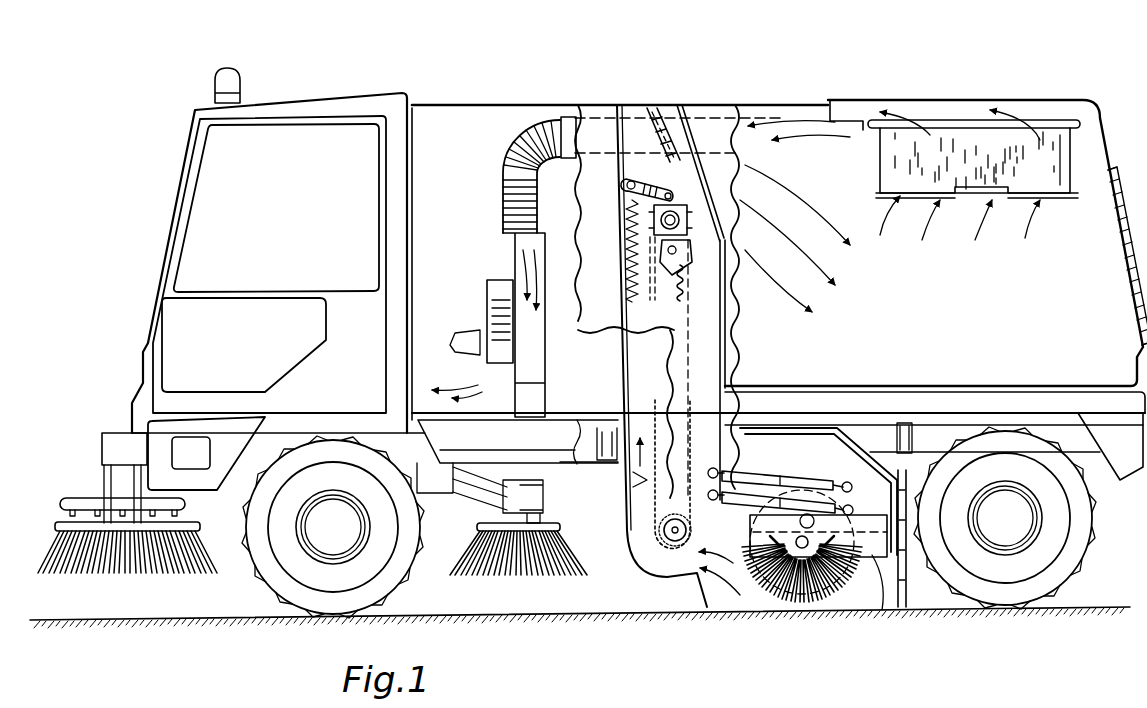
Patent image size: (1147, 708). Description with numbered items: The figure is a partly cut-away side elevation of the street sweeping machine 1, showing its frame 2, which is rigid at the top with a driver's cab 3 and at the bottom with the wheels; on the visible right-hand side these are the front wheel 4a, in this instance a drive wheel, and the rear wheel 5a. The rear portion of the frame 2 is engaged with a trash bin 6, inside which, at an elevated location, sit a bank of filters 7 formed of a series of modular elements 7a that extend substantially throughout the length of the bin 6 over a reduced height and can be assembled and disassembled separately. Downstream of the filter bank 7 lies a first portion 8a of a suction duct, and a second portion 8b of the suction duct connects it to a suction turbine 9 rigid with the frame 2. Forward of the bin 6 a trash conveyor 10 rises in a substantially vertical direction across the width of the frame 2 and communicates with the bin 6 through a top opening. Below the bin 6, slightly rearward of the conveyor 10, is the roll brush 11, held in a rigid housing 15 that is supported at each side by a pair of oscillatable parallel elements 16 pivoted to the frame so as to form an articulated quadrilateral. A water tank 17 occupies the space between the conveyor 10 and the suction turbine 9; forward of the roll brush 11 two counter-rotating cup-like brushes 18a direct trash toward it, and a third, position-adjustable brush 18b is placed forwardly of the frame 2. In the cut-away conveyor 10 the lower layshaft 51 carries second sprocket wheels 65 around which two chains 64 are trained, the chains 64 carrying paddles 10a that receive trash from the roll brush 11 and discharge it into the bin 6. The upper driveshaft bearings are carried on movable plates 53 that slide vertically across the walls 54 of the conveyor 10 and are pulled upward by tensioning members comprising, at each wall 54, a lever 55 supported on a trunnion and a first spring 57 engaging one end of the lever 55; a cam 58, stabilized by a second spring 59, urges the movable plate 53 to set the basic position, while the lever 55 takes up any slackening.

The street sweeping machine 1 is at (128, 90).
The frame 2 is at (160, 465).
The driver's cab 3 is at (148, 290).
The front wheel 4a is at (290, 600).
The rear wheel 5a is at (1000, 580).
The trash bin 6 is at (930, 97).
The bank of filters 7 is at (1060, 118).
The modular elements 7a is at (1068, 178).
The first portion of suction duct 8a is at (777, 117).
The second portion of suction duct 8b is at (515, 228).
The suction turbine 9 is at (487, 310).
The trash conveyor 10 is at (646, 575).
The paddles 10a is at (578, 414).
The roll brush 11 is at (792, 586).
The rigid housing 15 is at (880, 600).
The oscillatable parallel elements 16 is at (767, 493).
The water tank 17 is at (512, 196).
The cup-like brushes 18a is at (557, 577).
The third brush 18b is at (163, 575).
The layshaft 51 is at (673, 535).
The movable plates 53 is at (700, 198).
The walls 54 is at (634, 168).
The lever 55 is at (650, 195).
The first spring 57 is at (545, 128).
The cam 58 is at (690, 245).
The second spring 59 is at (686, 298).
The chains 64 is at (660, 350).
The second sprocket wheels 65 is at (663, 522).